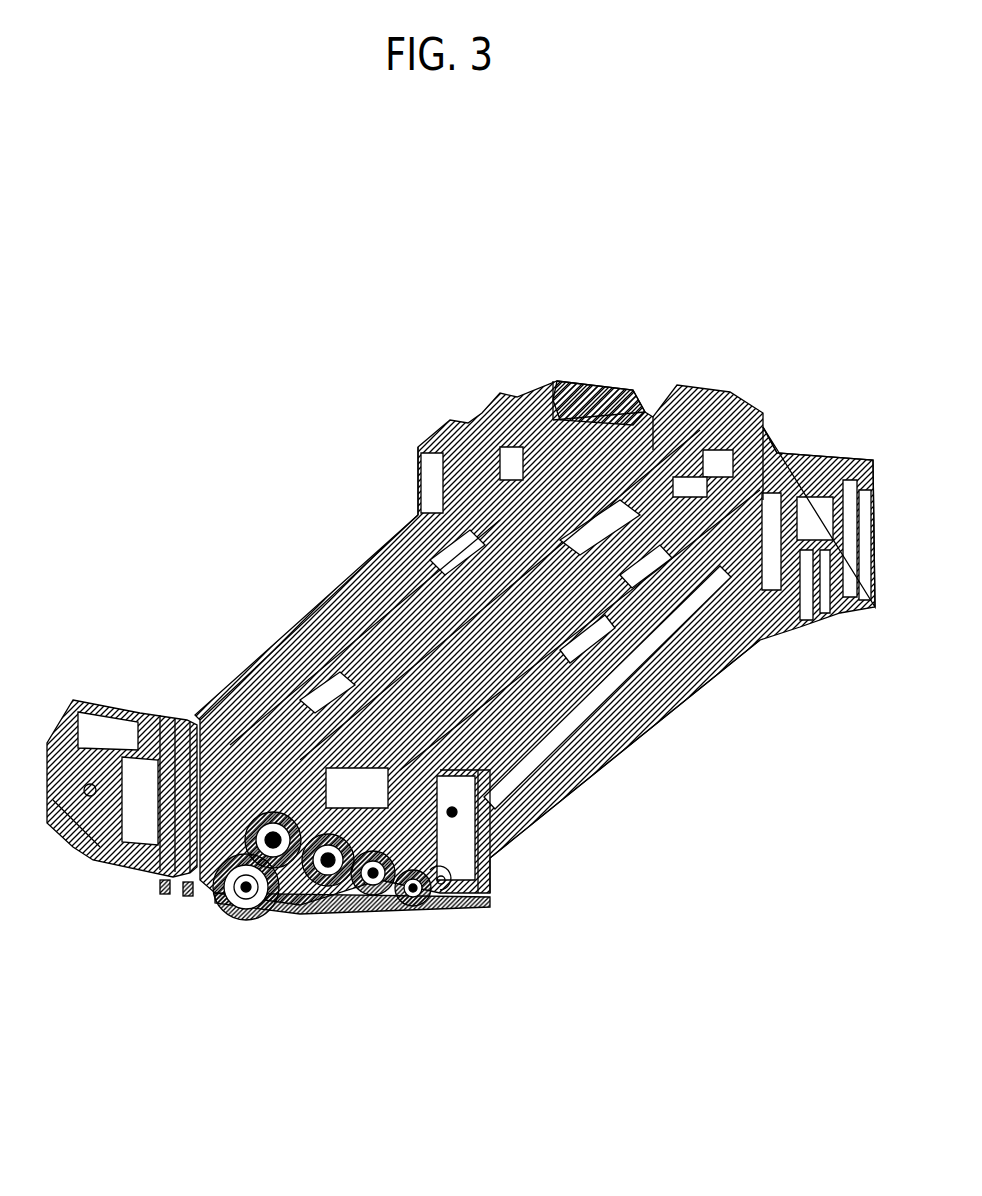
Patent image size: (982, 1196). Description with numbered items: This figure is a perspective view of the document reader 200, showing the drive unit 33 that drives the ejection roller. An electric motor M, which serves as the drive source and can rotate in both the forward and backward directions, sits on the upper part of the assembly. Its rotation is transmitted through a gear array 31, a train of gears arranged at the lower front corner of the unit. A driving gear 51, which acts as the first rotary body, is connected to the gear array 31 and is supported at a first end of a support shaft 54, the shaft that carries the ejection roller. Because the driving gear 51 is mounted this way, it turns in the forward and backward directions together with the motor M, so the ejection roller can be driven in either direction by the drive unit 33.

The fixing device 200 is at (461, 663).
The electric motor M is at (600, 392).
The gear array 31 is at (386, 920).
The support shaft 54 is at (380, 896).
The drive unit 33 is at (406, 926).
The driving gear 51 is at (455, 877).